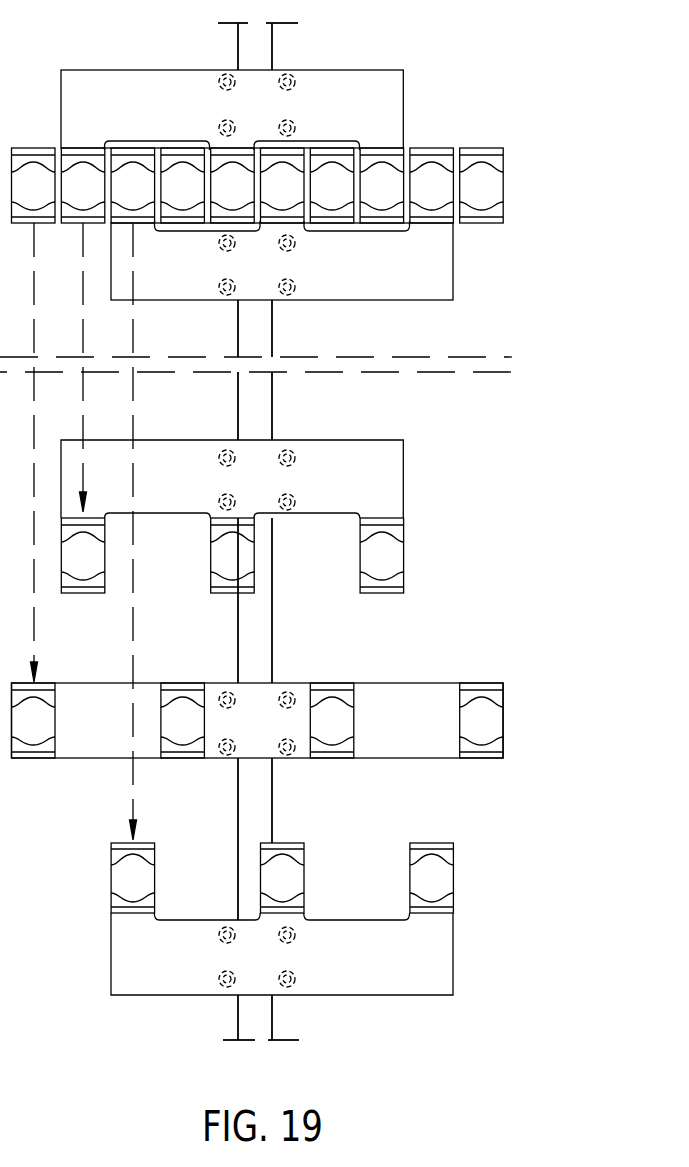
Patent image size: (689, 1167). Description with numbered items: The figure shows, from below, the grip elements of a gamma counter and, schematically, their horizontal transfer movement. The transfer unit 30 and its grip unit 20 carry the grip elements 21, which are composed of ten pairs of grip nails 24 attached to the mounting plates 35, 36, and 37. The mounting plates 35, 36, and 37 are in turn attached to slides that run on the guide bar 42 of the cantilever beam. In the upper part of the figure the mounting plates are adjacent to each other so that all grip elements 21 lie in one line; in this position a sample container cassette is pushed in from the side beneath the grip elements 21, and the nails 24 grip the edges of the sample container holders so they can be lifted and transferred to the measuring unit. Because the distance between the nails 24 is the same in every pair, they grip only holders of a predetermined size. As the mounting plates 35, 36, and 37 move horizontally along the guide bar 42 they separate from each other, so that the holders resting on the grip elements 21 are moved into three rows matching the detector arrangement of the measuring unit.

The grip unit 20 is at (303, 505).
The grip element 21 is at (493, 185).
The grip nail 24 is at (500, 210).
The transfer unit 30 is at (286, 274).
The mounting plate 35 is at (370, 80).
The mounting plate 36 is at (432, 697).
The mounting plate 37 is at (442, 263).
The guide bar 42 is at (275, 412).